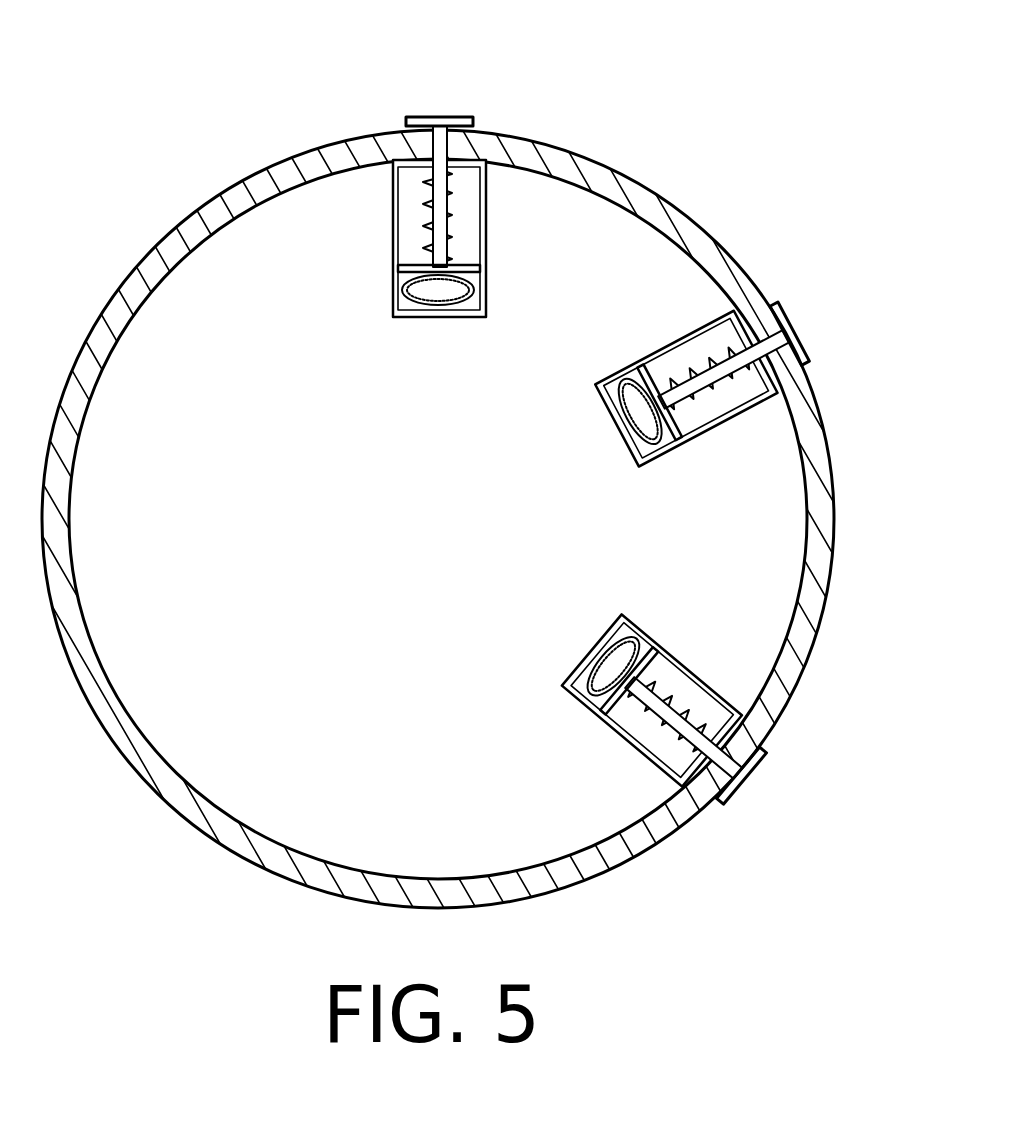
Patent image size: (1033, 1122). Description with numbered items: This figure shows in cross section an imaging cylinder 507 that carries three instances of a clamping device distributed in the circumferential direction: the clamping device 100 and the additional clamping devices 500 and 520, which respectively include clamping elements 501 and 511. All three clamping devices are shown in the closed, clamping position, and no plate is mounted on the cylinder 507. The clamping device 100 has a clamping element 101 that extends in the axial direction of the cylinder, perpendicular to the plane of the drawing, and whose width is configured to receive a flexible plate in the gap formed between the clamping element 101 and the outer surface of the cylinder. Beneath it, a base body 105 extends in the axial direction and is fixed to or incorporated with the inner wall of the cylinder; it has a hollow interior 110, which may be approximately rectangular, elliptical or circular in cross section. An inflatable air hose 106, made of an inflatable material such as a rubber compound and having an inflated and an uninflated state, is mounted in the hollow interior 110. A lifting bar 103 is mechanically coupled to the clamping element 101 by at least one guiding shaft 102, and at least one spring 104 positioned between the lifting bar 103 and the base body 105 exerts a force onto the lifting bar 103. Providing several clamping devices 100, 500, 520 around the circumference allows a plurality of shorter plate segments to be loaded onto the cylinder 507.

The clamping device 100 is at (421, 219).
The clamping element 101 is at (446, 118).
The guiding shaft 102 is at (437, 150).
The lifting bar 103 is at (413, 267).
The spring 104 is at (440, 192).
The base body 105 is at (467, 315).
The inflatable air hose 106 is at (395, 318).
The hollow interior 110 is at (413, 214).
The clamping device 500 is at (691, 370).
The clamping element 501 is at (780, 305).
The cylinder 507 is at (298, 158).
The clamping element 511 is at (752, 778).
The clamping device 520 is at (635, 711).